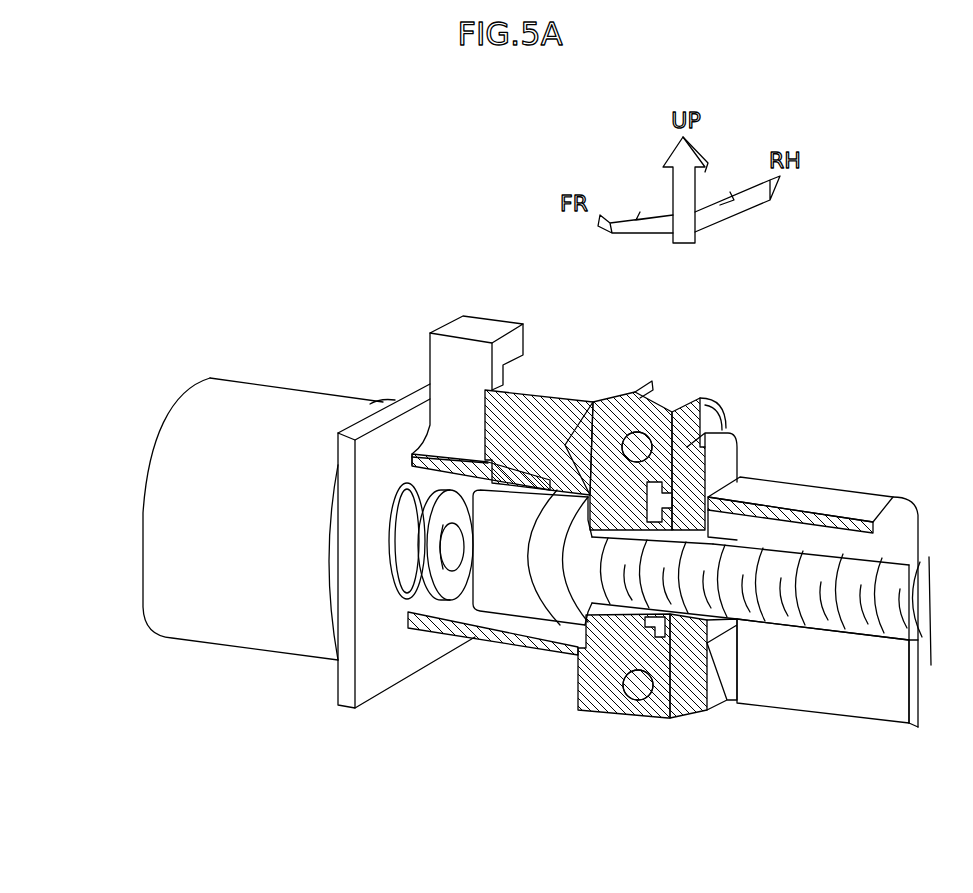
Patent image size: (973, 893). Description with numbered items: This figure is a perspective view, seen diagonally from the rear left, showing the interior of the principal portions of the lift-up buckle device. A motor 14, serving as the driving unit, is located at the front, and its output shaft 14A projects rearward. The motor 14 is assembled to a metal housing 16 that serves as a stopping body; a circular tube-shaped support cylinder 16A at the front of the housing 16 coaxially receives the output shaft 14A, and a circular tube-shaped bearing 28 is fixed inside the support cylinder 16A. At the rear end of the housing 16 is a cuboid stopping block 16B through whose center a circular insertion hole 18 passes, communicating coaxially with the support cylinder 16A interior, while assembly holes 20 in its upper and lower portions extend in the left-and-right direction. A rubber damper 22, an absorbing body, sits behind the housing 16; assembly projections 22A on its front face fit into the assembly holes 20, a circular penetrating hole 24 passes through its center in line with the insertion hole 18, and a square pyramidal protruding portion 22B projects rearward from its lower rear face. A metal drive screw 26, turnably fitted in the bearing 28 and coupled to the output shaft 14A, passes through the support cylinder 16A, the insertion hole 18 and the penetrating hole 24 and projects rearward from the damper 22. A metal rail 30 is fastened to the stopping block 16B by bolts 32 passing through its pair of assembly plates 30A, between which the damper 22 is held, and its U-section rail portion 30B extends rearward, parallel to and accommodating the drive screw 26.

The motor 14 is at (290, 390).
The output shaft 14A is at (455, 557).
The housing 16 is at (466, 316).
The support cylinder 16A is at (443, 628).
The stopping block 16B is at (690, 398).
The insertion hole 18 is at (615, 538).
The assembly hole 20 is at (630, 470).
The damper 22 is at (738, 443).
The assembly projection 22A is at (665, 480).
The protruding portion 22B is at (723, 695).
The penetrating hole 24 is at (717, 543).
The drive screw 26 is at (862, 633).
The bearing 28 is at (542, 595).
The rail 30 is at (868, 487).
The assembly plate 30A is at (725, 407).
The rail portion 30B is at (805, 713).
The bolt 32 is at (642, 432).